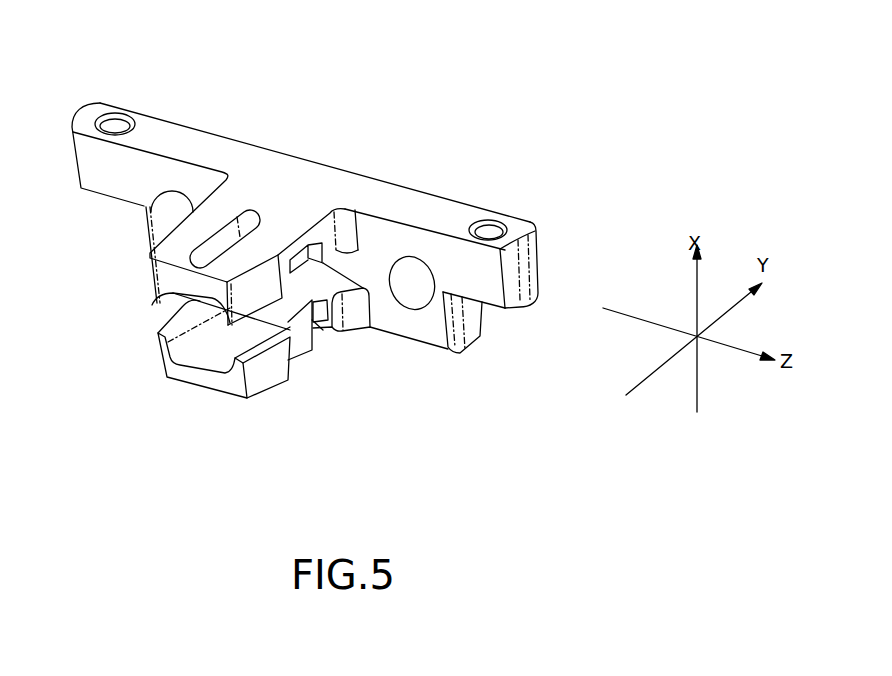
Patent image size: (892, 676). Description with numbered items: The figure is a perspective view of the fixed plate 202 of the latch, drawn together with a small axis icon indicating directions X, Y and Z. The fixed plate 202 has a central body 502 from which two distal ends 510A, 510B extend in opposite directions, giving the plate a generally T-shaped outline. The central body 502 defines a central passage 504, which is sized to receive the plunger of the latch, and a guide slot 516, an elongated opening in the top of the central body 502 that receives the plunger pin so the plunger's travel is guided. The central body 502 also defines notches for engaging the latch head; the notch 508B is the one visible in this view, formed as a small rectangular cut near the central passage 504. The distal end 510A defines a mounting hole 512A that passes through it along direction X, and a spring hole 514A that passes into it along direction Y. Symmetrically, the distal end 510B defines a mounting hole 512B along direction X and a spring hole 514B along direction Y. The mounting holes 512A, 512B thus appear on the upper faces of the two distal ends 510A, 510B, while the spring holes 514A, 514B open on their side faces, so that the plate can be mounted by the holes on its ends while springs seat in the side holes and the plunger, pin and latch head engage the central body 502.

The fixed plate 202 is at (584, 66).
The central body 502 is at (330, 190).
The central passage 504 is at (206, 363).
The notch 508B is at (308, 335).
The distal end 510A is at (190, 143).
The distal end 510B is at (395, 210).
The mounting hole 512A is at (120, 113).
The mounting hole 512B is at (504, 223).
The spring hole 514A is at (161, 217).
The spring hole 514B is at (419, 301).
The guide slot 516 is at (257, 206).